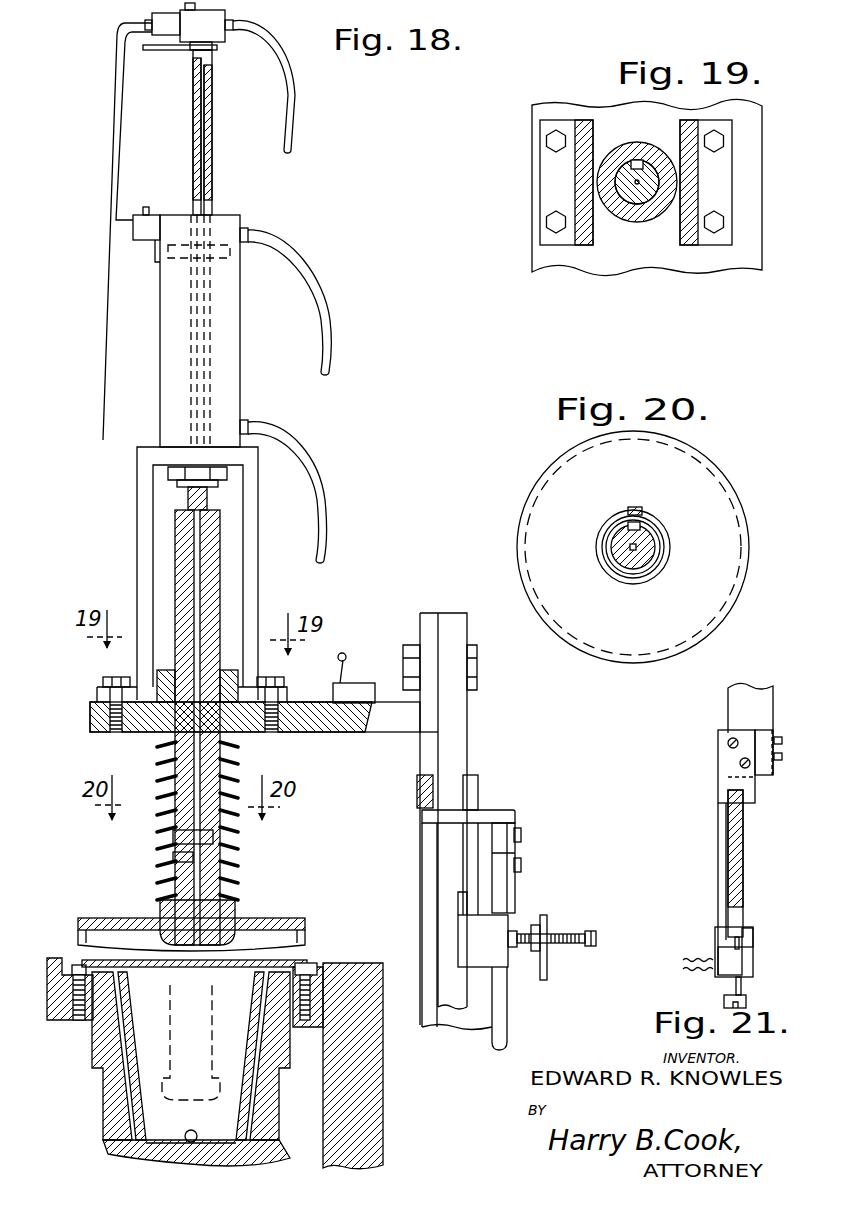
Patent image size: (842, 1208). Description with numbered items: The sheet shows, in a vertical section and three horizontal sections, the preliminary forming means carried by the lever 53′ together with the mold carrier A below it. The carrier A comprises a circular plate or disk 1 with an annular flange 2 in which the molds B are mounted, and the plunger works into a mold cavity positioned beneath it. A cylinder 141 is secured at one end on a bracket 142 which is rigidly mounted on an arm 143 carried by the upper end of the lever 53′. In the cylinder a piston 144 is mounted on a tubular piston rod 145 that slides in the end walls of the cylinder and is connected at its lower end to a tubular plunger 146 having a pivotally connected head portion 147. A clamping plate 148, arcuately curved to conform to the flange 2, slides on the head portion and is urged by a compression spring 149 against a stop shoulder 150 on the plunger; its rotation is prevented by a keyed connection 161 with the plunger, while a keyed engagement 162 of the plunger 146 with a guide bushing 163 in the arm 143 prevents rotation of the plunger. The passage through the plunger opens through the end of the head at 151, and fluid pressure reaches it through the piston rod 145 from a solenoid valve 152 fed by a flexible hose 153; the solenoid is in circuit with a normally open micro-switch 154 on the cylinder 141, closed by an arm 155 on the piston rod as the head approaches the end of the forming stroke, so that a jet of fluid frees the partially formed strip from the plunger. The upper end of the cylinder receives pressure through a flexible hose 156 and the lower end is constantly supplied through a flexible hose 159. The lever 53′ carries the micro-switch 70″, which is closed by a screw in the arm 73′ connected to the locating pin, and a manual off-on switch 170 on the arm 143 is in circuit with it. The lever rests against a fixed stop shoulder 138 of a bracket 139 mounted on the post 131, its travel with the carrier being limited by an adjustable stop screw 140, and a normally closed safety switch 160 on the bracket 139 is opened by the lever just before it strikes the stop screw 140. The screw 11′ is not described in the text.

In FIG. 18, the circular plate or disk 1 is at (373, 1105).
In FIG. 18, the annular flange 2 is at (60, 1020).
In FIG. 18, the mold carrier A is at (344, 961).
In FIG. 18, the mold B is at (95, 1105).
In FIG. 18, the adjusting screw 11′ is at (570, 933).
In FIG. 18, the lever 53′ is at (452, 710).
In FIG. 21, the lever 53′ is at (753, 854).
In FIG. 18, the arm 73′ is at (545, 970).
In FIG. 18, the vertical standard or post 131 is at (499, 1029).
In FIG. 21, the vertical standard or post 131 is at (758, 722).
In FIG. 21, the fixed stop shoulder 138 is at (738, 778).
In FIG. 18, the bracket 139 is at (417, 795).
In FIG. 21, the bracket 139 is at (720, 802).
In FIG. 21, the adjustable stop screw 140 is at (750, 938).
In FIG. 18, the cylinder 141 is at (228, 342).
In FIG. 18, the bracket 142 is at (143, 467).
In FIG. 19, the bracket 142 is at (585, 200).
In FIG. 18, the arm 143 is at (372, 735).
In FIG. 19, the arm 143 is at (728, 263).
In FIG. 18, the piston 144 is at (232, 266).
In FIG. 18, the tubular piston rod 145 is at (210, 182).
In FIG. 18, the tubular plunger 146 is at (180, 555).
In FIG. 19, the tubular plunger 146 is at (623, 178).
In FIG. 20, the tubular plunger 146 is at (648, 567).
In FIG. 18, the head portion 147 is at (205, 888).
In FIG. 18, the clamping plate 148 is at (298, 921).
In FIG. 20, the clamping plate 148 is at (557, 495).
In FIG. 18, the compression spring 149 is at (173, 833).
In FIG. 20, the compression spring 149 is at (597, 545).
In FIG. 18, the stop shoulder 150 is at (225, 913).
In FIG. 18, the passage opening 151 is at (193, 930).
In FIG. 18, the solenoid valve 152 is at (218, 44).
In FIG. 18, the flexible hose 153 is at (295, 123).
In FIG. 18, the micro-switch 154 is at (163, 187).
In FIG. 18, the arm 155 is at (172, 50).
In FIG. 18, the flexible hose 156 is at (335, 325).
In FIG. 18, the flexible hose 159 is at (313, 470).
In FIG. 21, the switch 160 is at (725, 957).
In FIG. 20, the keyed connection 161 is at (637, 524).
In FIG. 19, the keyed engagement 162 is at (631, 160).
In FIG. 18, the guide bushing 163 is at (158, 683).
In FIG. 19, the guide bushing 163 is at (635, 222).
In FIG. 18, the manually operated off-on switch 170 is at (365, 680).